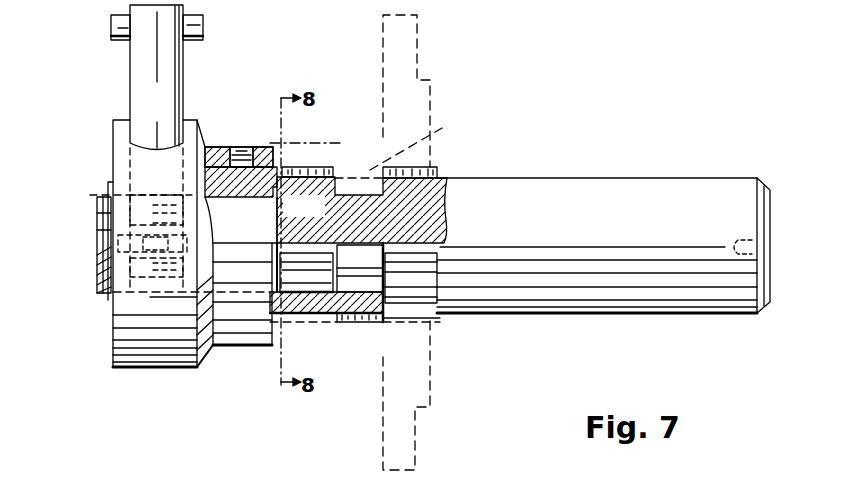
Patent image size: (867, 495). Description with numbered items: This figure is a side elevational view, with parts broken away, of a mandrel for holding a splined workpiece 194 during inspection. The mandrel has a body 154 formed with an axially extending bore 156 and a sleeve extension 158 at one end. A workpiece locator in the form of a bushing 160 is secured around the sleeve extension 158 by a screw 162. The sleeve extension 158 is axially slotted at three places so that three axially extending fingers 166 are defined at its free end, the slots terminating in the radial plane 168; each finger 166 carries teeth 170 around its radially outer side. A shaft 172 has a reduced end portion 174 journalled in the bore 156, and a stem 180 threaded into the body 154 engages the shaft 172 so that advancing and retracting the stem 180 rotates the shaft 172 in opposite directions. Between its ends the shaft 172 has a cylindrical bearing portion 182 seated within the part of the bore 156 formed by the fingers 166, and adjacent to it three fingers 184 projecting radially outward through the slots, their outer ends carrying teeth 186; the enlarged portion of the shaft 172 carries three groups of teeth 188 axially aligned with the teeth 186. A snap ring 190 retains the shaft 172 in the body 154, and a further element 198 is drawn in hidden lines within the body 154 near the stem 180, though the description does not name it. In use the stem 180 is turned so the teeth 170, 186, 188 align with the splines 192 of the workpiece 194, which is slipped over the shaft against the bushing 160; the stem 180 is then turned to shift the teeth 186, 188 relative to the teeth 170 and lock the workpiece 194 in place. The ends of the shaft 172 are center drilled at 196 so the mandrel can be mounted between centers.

The body 154 is at (152, 357).
The bore 156 is at (227, 197).
The sleeve extension 158 is at (222, 147).
The bushing 160 is at (262, 147).
The screw 162 is at (248, 147).
The fingers 166 is at (310, 311).
The radial plane 168 is at (358, 193).
The teeth 170 is at (388, 320).
The shaft 172 is at (628, 187).
The reduced end portion 174 is at (243, 237).
The stem 180 is at (176, 67).
The cylindrical bearing portion 182 is at (367, 287).
The fingers 184 is at (297, 178).
The teeth 186 is at (308, 173).
The teeth 188 is at (432, 170).
The snap ring 190 is at (110, 300).
The splines 192 is at (426, 144).
The workpiece 194 is at (430, 110).
The center drilled ends 196 is at (762, 254).
The pin 198 is at (110, 233).